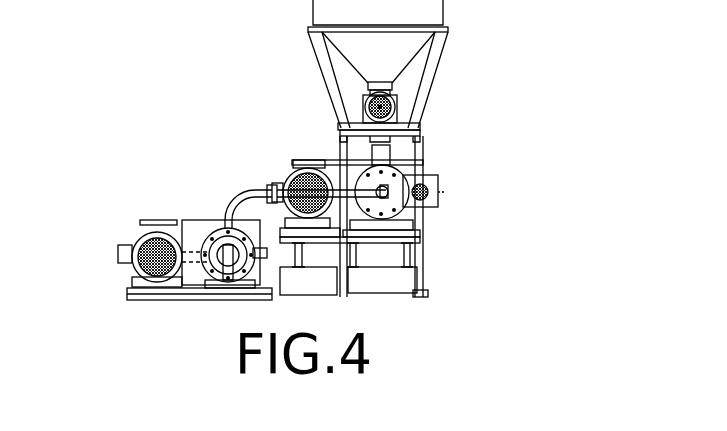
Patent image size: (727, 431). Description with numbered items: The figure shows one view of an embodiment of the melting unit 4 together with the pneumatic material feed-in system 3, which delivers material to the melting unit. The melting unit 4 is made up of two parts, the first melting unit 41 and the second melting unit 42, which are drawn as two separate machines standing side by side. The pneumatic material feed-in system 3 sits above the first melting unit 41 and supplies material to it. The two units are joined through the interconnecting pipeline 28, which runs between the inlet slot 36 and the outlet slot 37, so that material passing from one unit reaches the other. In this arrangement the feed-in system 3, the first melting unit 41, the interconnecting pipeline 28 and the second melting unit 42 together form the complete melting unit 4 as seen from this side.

The melting unit 4 is at (260, 122).
The pneumatic material feed-in system 3 is at (433, 85).
The inlet slot 36 is at (229, 231).
The outlet slot 37 is at (208, 247).
The first melting unit 41 is at (425, 221).
The second melting unit 42 is at (153, 220).
The interconnecting pipeline 28 is at (243, 193).